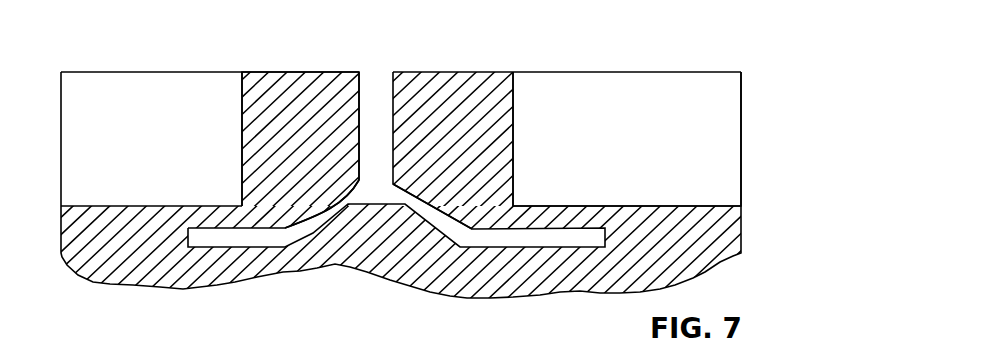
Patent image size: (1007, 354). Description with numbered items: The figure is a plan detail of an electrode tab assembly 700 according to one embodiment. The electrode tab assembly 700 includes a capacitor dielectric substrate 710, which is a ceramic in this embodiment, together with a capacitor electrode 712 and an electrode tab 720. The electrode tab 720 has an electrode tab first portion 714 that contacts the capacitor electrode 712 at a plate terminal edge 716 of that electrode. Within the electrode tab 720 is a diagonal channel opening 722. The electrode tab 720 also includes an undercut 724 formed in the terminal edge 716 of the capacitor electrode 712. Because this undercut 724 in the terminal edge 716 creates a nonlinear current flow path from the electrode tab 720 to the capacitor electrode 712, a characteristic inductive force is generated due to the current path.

The electrode tab assembly 700 is at (797, 83).
The capacitor dielectric substrate 710 is at (643, 95).
The capacitor electrode 712 is at (130, 222).
The electrode tab first portion 714 is at (265, 107).
The plate terminal edge 716 is at (587, 204).
The electrode tab 720 is at (242, 132).
The diagonal channel opening 722 is at (395, 203).
The undercut 724 is at (228, 247).